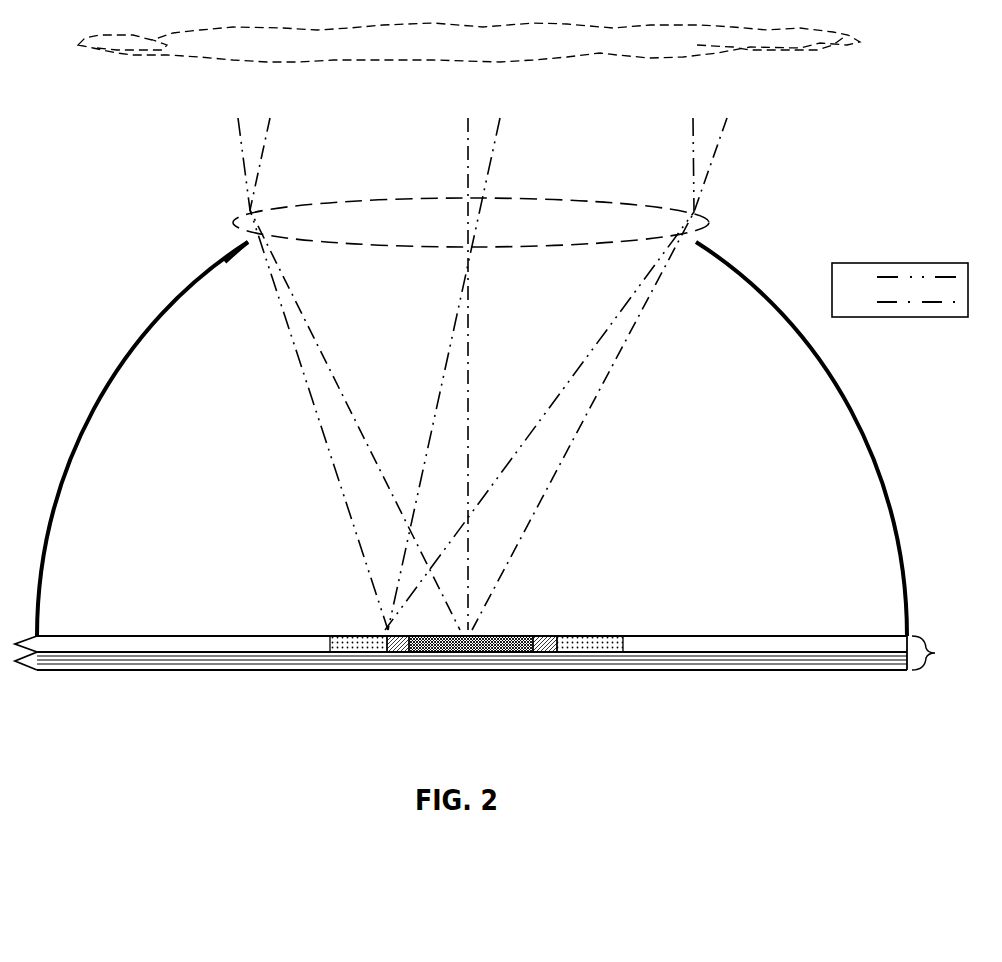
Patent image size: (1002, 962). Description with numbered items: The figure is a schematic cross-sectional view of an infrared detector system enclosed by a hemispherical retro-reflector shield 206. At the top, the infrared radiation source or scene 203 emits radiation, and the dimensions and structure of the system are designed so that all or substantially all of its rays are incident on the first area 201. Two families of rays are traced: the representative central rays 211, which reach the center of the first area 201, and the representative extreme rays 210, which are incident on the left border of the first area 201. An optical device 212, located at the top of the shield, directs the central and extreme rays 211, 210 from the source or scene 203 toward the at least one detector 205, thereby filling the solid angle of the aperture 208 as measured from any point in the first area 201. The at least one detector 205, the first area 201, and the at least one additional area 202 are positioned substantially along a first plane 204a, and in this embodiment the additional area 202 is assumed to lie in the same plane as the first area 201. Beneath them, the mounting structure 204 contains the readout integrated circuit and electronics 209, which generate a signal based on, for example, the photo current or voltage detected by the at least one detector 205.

The first area 201 is at (400, 647).
The at least one additional area 202 is at (353, 643).
The infrared radiation source or scene 203 is at (808, 40).
The mounting structure 204 is at (495, 653).
The first plane 204a is at (842, 632).
The at least one detector 205 is at (515, 645).
The hemispherical retro-reflector shield 206 is at (853, 412).
The aperture 208 is at (250, 238).
The readout integrated circuit and electronics 209 is at (810, 667).
The representative extreme rays 210 is at (468, 573).
The representative central rays 211 is at (602, 374).
The optical device 212 is at (300, 228).